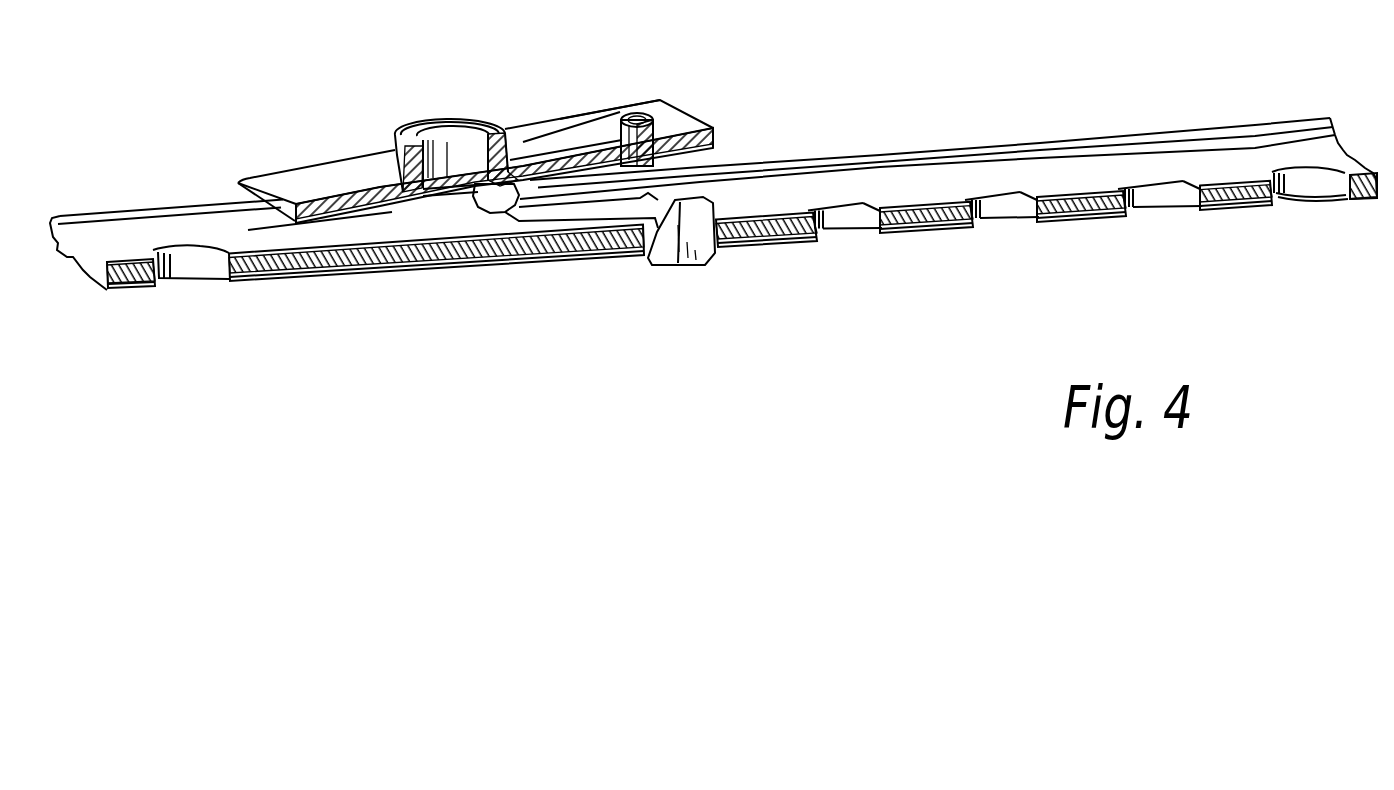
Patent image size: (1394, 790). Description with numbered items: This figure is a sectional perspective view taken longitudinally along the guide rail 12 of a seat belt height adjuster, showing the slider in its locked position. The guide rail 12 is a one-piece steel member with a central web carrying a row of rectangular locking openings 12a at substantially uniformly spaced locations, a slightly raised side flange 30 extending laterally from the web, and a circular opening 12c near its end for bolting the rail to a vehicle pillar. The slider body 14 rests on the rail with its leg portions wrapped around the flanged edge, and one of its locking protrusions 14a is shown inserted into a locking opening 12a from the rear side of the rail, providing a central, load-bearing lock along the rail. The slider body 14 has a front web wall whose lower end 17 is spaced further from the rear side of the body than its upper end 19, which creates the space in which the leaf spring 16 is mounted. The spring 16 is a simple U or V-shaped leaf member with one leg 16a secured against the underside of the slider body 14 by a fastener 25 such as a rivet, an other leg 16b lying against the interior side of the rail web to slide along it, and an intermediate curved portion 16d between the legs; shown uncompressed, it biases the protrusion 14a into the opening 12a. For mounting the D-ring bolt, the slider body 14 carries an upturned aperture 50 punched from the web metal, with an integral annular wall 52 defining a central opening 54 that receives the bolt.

The guide rail 12 is at (713, 187).
The locking opening 12a is at (1007, 212).
The circular opening 12c is at (203, 263).
The slider body 14 is at (536, 190).
The locking protrusion 14a is at (708, 265).
The leaf spring 16 is at (529, 226).
The spring leg 16a is at (580, 124).
The spring leg 16b is at (583, 215).
The intermediate curved portion 16d is at (493, 243).
The lower end of web 17 is at (722, 120).
The upper end of web 19 is at (258, 186).
The fastener 25 is at (630, 128).
The side flange 30 is at (997, 143).
The upturned aperture 50 is at (487, 97).
The annular wall 52 is at (530, 127).
The central opening 54 is at (448, 118).